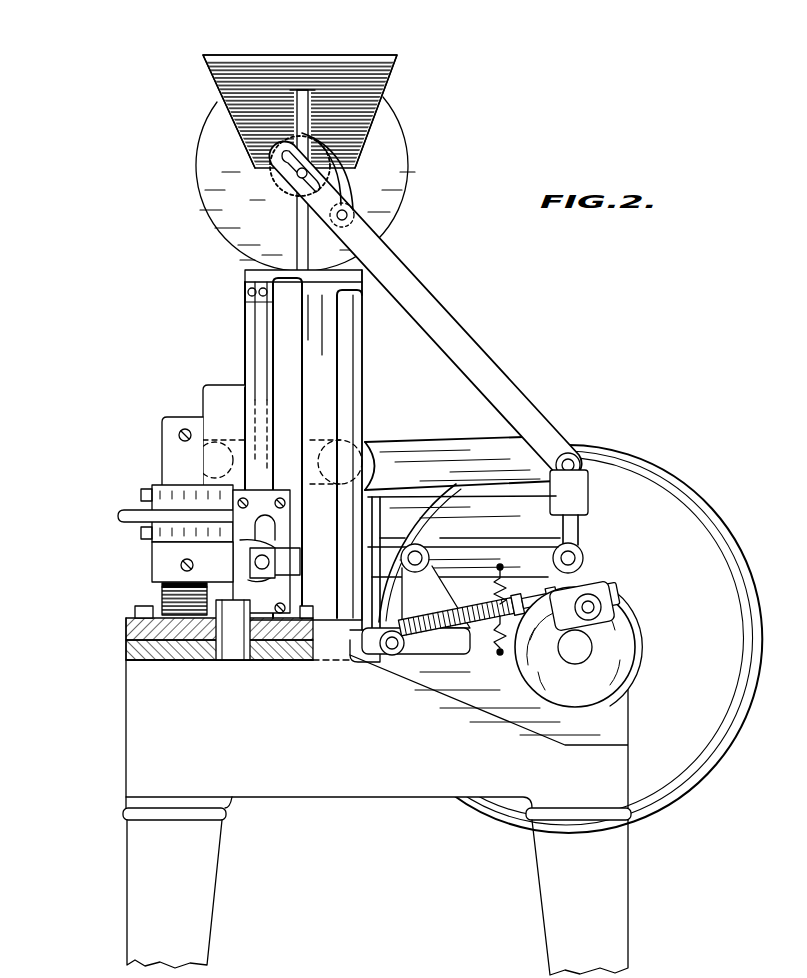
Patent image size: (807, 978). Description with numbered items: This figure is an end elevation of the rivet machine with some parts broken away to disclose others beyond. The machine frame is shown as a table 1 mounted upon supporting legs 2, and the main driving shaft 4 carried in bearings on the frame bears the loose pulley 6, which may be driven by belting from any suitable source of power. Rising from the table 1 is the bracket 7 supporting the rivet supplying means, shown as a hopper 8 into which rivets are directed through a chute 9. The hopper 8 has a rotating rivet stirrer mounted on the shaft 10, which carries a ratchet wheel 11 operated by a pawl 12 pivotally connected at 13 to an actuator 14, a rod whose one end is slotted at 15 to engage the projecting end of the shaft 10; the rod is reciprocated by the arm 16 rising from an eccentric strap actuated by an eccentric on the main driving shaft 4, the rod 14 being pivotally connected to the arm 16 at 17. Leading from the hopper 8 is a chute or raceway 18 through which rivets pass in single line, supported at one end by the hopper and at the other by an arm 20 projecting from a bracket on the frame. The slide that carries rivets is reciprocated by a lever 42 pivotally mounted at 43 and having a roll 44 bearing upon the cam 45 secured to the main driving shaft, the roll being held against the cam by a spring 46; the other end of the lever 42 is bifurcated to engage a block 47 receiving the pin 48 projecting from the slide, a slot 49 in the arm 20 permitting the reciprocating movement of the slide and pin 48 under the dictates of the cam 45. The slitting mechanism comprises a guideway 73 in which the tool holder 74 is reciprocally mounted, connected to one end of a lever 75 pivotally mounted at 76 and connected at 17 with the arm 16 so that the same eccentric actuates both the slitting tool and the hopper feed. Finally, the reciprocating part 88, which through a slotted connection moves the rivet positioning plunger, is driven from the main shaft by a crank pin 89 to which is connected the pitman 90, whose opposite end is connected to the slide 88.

The table 1 is at (137, 757).
The supporting legs 2 is at (200, 901).
The main driving shaft 4 is at (582, 650).
The loose pulley 6 is at (722, 518).
The bracket 7 is at (362, 376).
The hopper 8 is at (403, 118).
The chute 9 is at (345, 58).
The shaft 10 is at (280, 172).
The ratchet wheel 11 is at (284, 194).
The pawl 12 is at (345, 178).
The pivot 13 is at (352, 212).
The actuator 14 is at (397, 268).
The slot 15 is at (270, 152).
The arm 16 is at (585, 520).
The pivotal connection 17 is at (575, 455).
The chute or raceway 18 is at (247, 343).
The arm 20 is at (290, 524).
The lever 42 is at (470, 548).
The pivot 43 is at (412, 546).
The roll 44 is at (590, 558).
The cam 45 is at (615, 605).
The spring 46 is at (505, 642).
The block 47 is at (248, 548).
The pin 48 is at (254, 566).
The slot 49 is at (235, 510).
The guideway 73 is at (165, 435).
The tool holder 74 is at (212, 410).
The lever 75 is at (407, 445).
The pivot 76 is at (362, 440).
The reciprocating part 88 is at (288, 657).
The crank pin 89 is at (600, 615).
The pitman 90 is at (560, 590).